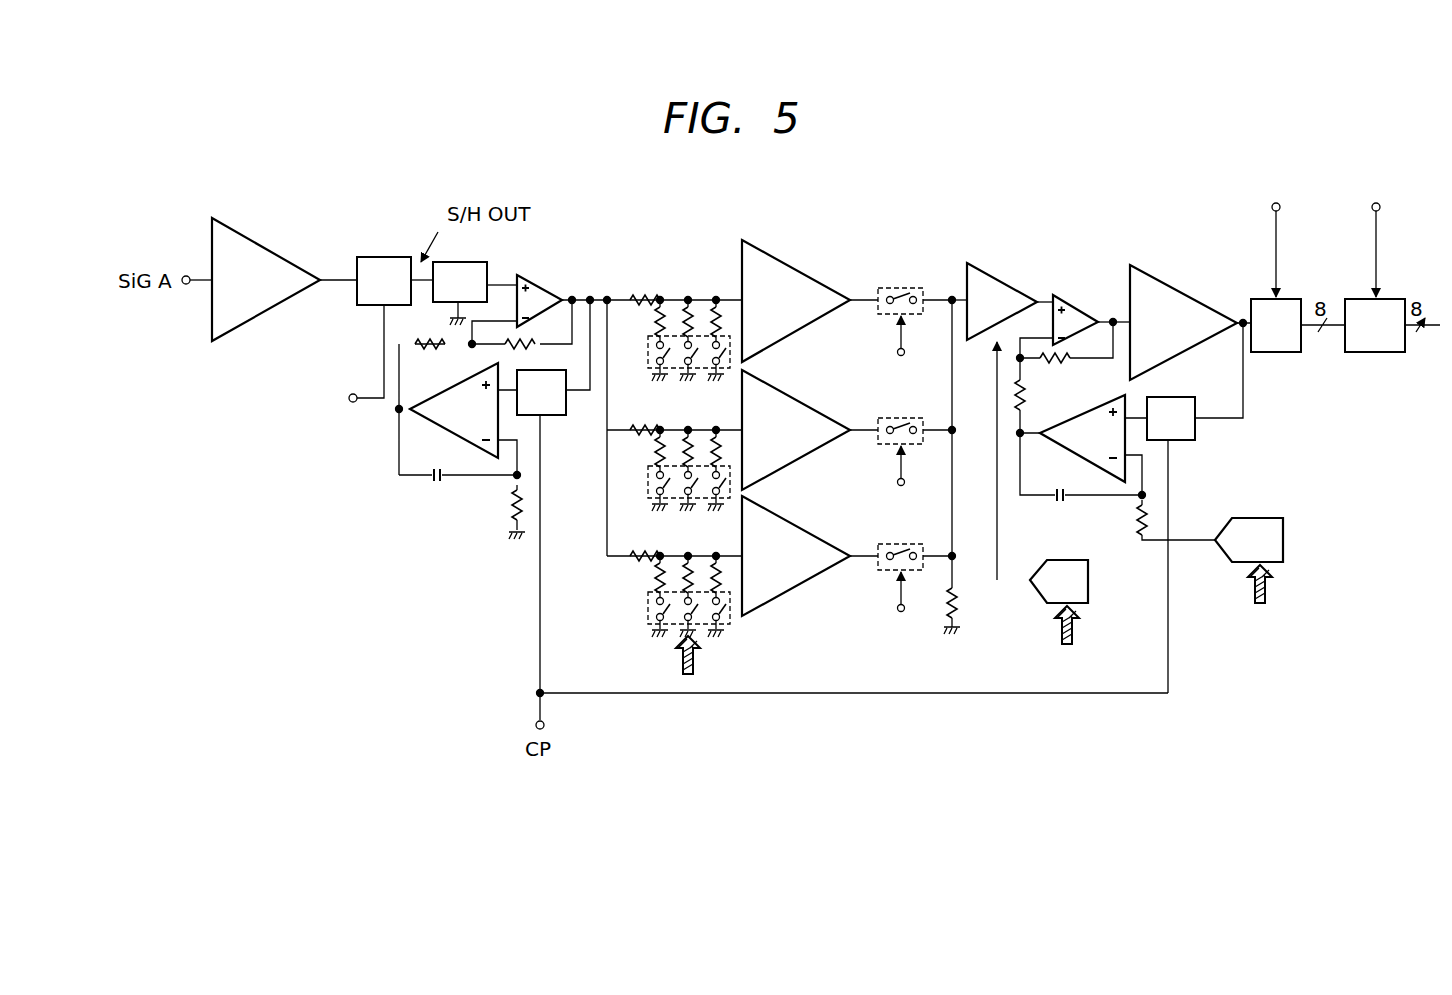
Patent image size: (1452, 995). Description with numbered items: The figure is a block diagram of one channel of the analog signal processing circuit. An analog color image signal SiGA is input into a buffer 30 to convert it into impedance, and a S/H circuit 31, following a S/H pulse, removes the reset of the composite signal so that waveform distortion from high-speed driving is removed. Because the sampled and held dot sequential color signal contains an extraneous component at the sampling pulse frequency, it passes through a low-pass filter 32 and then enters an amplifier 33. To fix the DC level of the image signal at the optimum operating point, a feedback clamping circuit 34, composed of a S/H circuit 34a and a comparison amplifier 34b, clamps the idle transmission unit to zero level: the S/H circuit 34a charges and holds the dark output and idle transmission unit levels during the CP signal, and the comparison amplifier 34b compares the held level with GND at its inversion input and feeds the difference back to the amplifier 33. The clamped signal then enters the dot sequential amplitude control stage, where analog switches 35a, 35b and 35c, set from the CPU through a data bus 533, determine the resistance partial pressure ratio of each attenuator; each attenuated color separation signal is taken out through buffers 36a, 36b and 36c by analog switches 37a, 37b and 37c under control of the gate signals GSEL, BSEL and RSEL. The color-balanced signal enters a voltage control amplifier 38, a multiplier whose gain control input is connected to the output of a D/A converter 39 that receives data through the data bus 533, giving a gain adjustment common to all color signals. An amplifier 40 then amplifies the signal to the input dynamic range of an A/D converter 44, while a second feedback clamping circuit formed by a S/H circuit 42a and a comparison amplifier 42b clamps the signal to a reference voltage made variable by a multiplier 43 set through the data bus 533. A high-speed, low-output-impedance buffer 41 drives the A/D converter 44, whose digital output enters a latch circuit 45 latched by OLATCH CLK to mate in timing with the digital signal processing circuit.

The buffer 30 is at (238, 223).
The S/H circuit 31 is at (386, 257).
The low-pass filter 32 is at (466, 262).
The amplifier 33 is at (541, 283).
The feedback clamping circuit 34 is at (439, 419).
The S/H circuit 34a is at (557, 415).
The comparison amplifier 34b is at (434, 415).
The analog switches 35a is at (652, 350).
The analog switches 35b is at (654, 480).
The analog switches 35c is at (646, 600).
The buffer 36a is at (802, 272).
The buffer 36b is at (792, 398).
The buffer 36c is at (796, 524).
The analog switch 37a is at (905, 287).
The analog switch 37b is at (880, 447).
The analog switch 37c is at (880, 573).
The voltage control amplifier 38 is at (1005, 276).
The D/A converter 39 is at (1088, 582).
The amplifier 40 is at (1073, 292).
The buffer 41 is at (1178, 292).
The S/H circuit 42a is at (1170, 397).
The comparison amplifier 42b is at (1078, 470).
The multiplier 43 is at (1283, 540).
The A/D converter 44 is at (1280, 352).
The latch circuit 45 is at (1374, 352).
The data bus 533 is at (996, 621).